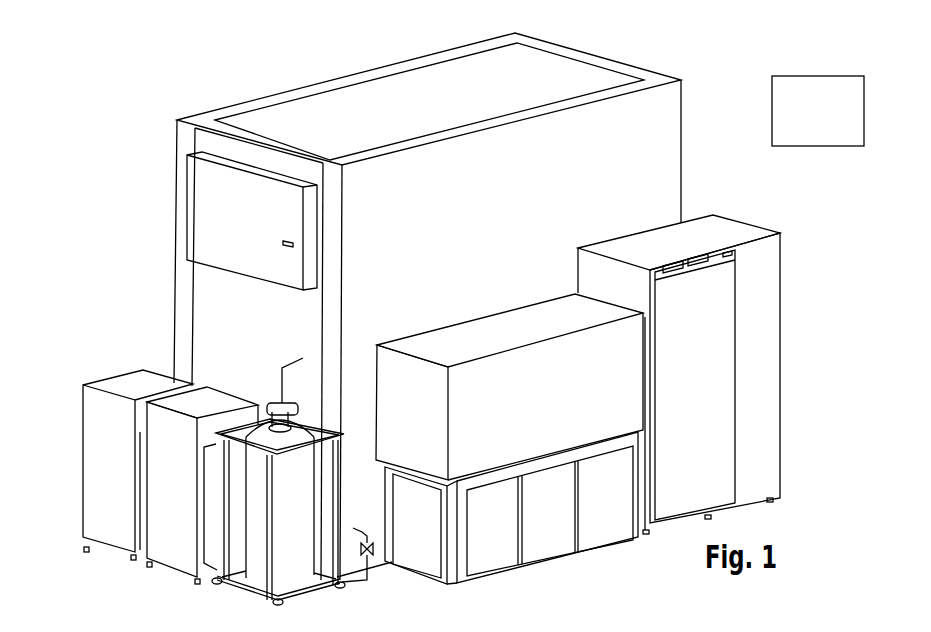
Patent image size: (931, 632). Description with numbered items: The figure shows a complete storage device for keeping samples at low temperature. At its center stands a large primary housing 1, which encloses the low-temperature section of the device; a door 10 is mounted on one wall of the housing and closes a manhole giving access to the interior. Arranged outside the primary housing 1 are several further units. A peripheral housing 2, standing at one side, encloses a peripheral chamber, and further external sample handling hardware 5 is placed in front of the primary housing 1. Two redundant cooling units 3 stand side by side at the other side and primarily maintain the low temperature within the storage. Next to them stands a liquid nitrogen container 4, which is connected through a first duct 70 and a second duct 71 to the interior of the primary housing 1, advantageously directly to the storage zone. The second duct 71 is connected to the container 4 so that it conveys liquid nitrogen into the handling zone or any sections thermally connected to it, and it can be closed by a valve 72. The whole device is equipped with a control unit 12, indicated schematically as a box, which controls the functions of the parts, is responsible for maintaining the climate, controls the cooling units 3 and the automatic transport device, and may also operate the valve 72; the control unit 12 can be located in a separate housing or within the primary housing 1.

The primary housing 1 is at (427, 290).
The peripheral housing 2 is at (681, 356).
The cooling units 3 is at (157, 489).
The liquid nitrogen container 4 is at (273, 521).
The external sample handling hardware 5 is at (509, 426).
The door 10 is at (210, 211).
The control unit 12 is at (810, 89).
The first duct 70 is at (280, 454).
The second duct 71 is at (364, 571).
The valve 72 is at (376, 551).